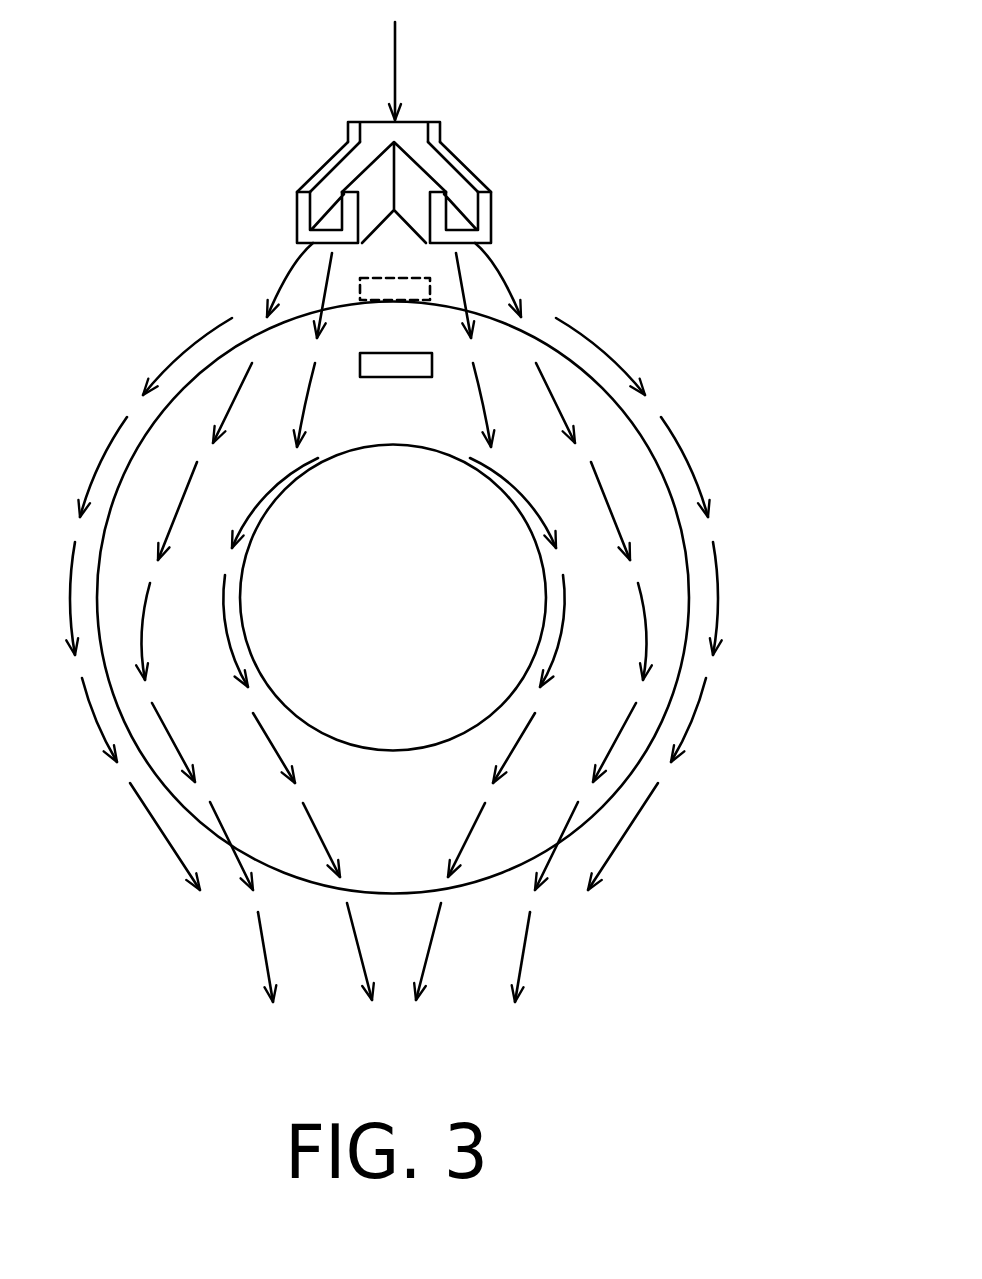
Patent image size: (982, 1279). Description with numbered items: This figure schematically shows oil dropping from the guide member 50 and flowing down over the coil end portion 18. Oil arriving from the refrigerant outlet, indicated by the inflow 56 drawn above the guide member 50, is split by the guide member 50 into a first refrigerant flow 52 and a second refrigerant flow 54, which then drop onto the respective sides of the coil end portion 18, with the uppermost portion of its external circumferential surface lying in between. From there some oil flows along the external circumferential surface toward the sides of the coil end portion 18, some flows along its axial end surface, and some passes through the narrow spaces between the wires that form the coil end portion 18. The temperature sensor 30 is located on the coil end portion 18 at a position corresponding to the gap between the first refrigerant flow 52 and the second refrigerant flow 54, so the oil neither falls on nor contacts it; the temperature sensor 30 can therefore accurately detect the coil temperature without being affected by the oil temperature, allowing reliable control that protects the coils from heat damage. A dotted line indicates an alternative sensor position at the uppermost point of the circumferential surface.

The coil end portion 18 is at (682, 532).
The temperature sensor 30 is at (393, 377).
The guide member 50 is at (468, 162).
The first refrigerant flow 52 is at (288, 272).
The second refrigerant flow 54 is at (500, 272).
The air supply 56 is at (398, 50).